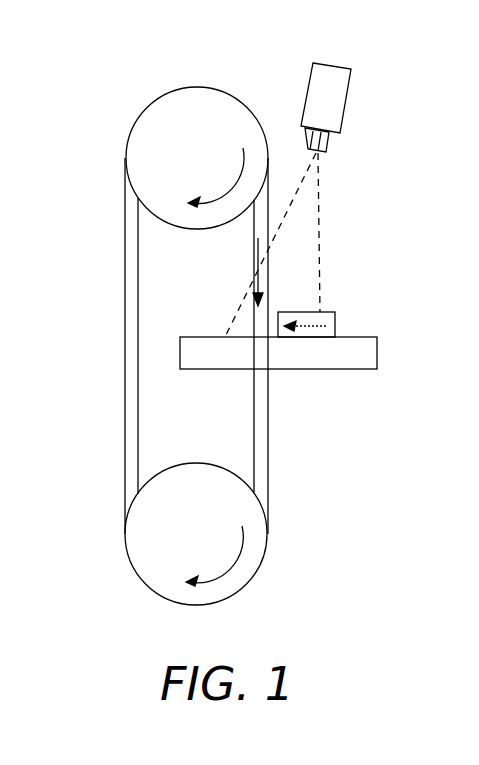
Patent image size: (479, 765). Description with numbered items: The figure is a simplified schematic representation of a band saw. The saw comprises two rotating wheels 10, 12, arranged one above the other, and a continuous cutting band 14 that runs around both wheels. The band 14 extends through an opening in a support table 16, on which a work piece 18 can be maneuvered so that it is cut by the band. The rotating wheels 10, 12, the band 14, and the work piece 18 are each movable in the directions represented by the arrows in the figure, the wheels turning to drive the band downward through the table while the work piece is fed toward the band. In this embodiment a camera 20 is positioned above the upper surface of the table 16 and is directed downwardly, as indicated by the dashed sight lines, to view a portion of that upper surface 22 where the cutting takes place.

The rotating wheel 10 is at (193, 107).
The rotating wheel 12 is at (250, 562).
The continuous cutting band 14 is at (130, 400).
The support table 16 is at (372, 355).
The work piece 18 is at (335, 320).
The camera 20 is at (340, 100).
The upper surface 22 is at (200, 337).